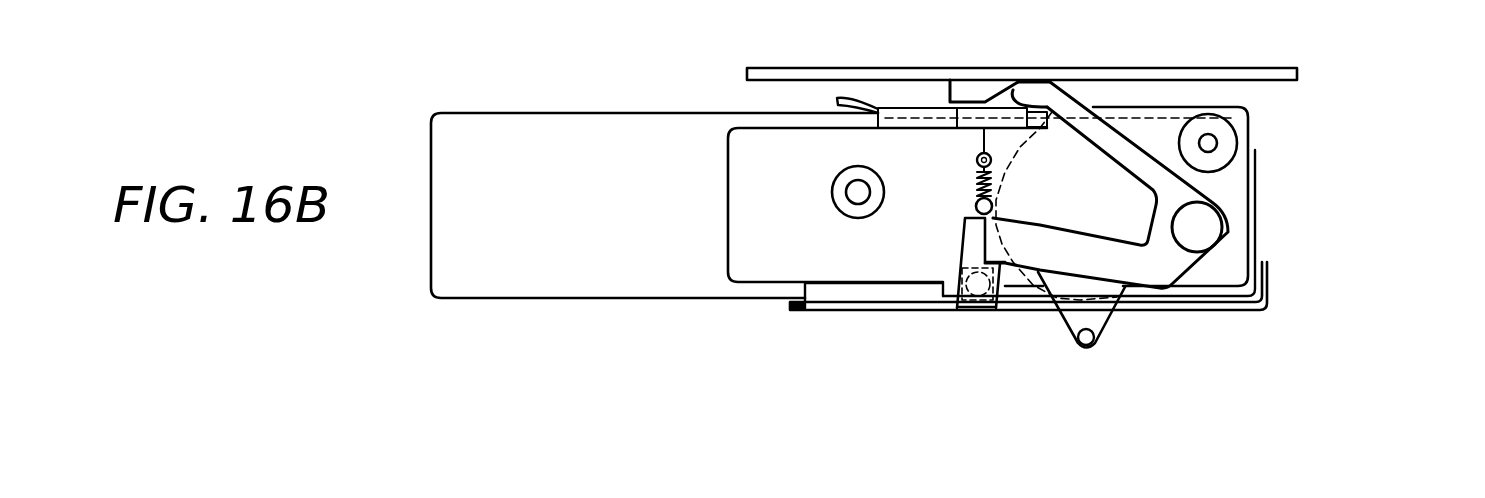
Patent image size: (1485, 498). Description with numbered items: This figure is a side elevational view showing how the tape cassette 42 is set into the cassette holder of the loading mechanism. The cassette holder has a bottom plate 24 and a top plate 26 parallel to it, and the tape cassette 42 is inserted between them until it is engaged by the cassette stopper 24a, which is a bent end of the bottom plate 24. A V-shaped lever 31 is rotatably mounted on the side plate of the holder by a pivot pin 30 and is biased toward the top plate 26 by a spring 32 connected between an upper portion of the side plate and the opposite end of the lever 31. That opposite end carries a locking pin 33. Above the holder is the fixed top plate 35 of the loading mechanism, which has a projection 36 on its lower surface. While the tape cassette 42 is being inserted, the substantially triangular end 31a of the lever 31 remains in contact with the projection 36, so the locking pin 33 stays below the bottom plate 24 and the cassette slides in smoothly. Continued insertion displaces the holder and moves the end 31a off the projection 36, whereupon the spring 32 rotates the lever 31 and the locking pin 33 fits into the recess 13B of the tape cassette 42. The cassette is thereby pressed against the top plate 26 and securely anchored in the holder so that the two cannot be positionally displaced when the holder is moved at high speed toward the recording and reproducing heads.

The tape cassette 42 is at (595, 113).
The top plate 26 is at (860, 108).
The fixed top plate 35 is at (1203, 68).
The projection 36 is at (980, 90).
The end of lever 31a is at (1047, 88).
The V-shaped lever 31 is at (1213, 205).
The pivot pin 30 is at (1198, 226).
The bottom plate 24 is at (1199, 309).
The cassette stopper 24a is at (1268, 288).
The spring 32 is at (977, 187).
The locking pin 33 is at (993, 313).
The recess 13B is at (940, 306).